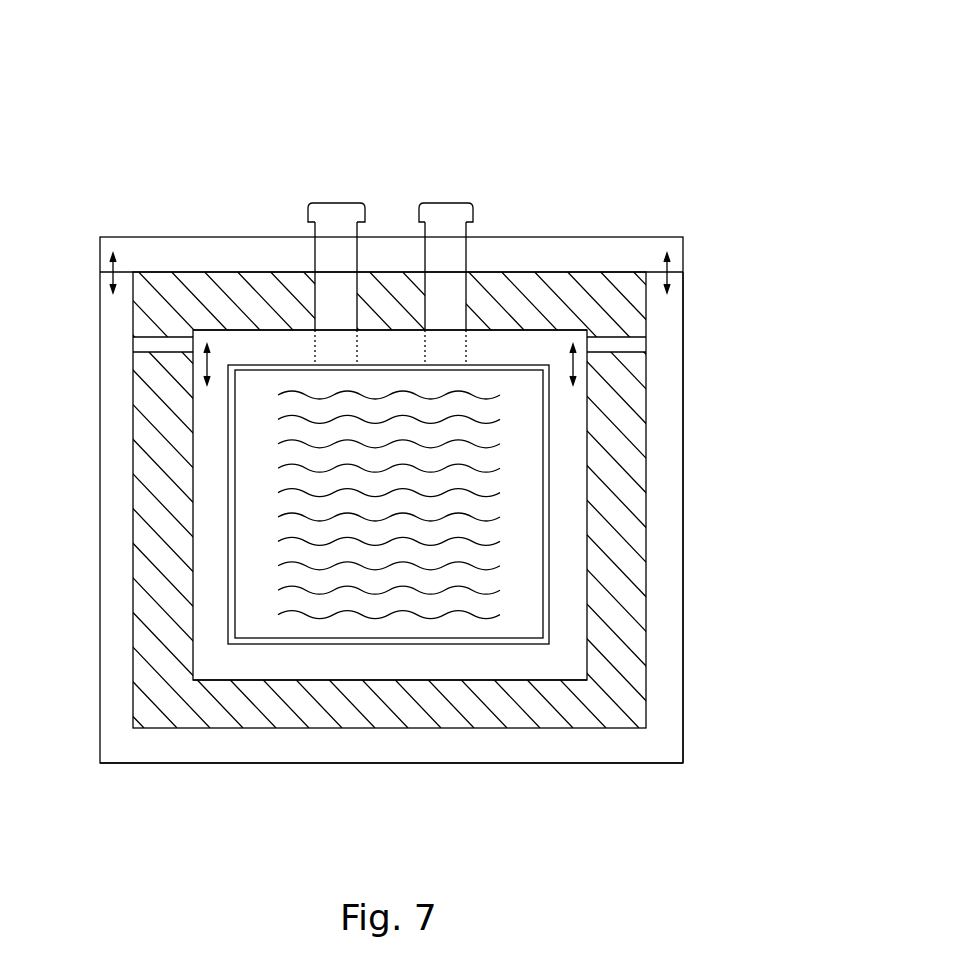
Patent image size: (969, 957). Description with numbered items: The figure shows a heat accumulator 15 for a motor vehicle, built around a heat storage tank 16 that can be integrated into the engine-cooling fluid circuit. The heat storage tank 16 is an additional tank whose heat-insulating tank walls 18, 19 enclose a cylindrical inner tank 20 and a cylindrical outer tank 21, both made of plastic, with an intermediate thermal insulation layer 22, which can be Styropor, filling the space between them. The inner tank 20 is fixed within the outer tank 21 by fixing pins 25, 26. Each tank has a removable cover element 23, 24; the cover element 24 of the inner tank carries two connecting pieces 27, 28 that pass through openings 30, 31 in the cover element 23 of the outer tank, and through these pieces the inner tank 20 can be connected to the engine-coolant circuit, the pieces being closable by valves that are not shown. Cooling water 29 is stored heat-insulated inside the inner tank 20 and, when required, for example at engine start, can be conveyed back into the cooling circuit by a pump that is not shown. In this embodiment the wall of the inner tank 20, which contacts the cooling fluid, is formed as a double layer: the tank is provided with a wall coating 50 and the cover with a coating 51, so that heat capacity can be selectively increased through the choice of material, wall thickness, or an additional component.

The heat accumulator 15 is at (578, 75).
The heat storage tank 16 is at (605, 198).
The heat-insulating tank wall 18 is at (672, 437).
The heat-insulating tank wall 19 is at (540, 663).
The inner tank 20 is at (443, 663).
The outer tank 21 is at (672, 527).
The thermal insulation layer 22 is at (255, 730).
The cover element 23 is at (638, 252).
The cover element 24 is at (490, 345).
The fixing pin 25 is at (645, 347).
The fixing pin 26 is at (153, 345).
The connecting piece 27 is at (313, 222).
The connecting piece 28 is at (470, 226).
The cooling water 29 is at (525, 575).
The opening 30 is at (313, 245).
The opening 31 is at (425, 247).
The wall coating 50 is at (230, 593).
The coating 51 is at (247, 365).